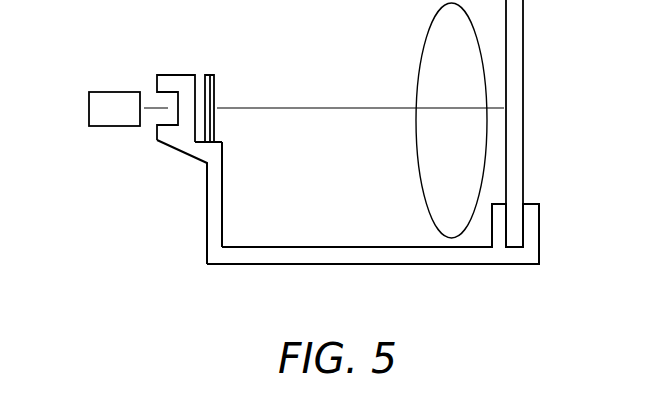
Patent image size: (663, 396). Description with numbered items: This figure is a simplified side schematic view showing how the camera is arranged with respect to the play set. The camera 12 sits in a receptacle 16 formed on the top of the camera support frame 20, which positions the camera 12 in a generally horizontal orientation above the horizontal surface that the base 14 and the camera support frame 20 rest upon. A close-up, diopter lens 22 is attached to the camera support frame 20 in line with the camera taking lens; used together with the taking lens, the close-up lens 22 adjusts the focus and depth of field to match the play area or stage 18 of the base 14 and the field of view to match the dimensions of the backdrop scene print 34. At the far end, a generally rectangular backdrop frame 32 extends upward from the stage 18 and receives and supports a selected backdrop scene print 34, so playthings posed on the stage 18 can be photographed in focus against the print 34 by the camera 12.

The camera 12 is at (102, 127).
The base 14 is at (332, 266).
The receptacle 16 is at (170, 74).
The play area or stage 18 is at (464, 190).
The camera support frame 20 is at (205, 237).
The close-up diopter lens 22 is at (215, 80).
The backdrop frame 32 is at (539, 237).
The backdrop scene print 34 is at (523, 155).